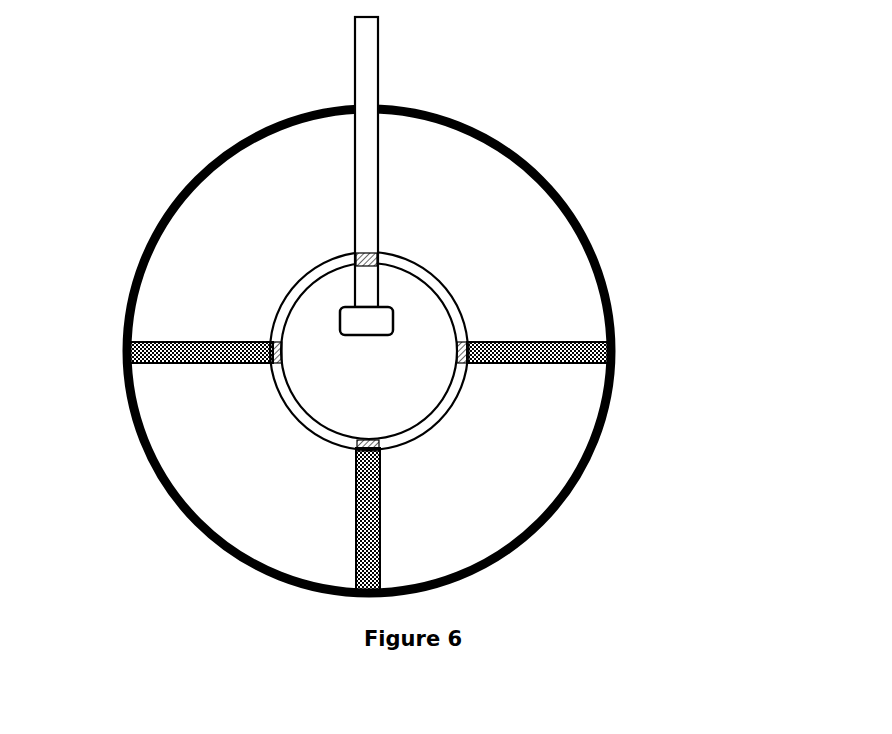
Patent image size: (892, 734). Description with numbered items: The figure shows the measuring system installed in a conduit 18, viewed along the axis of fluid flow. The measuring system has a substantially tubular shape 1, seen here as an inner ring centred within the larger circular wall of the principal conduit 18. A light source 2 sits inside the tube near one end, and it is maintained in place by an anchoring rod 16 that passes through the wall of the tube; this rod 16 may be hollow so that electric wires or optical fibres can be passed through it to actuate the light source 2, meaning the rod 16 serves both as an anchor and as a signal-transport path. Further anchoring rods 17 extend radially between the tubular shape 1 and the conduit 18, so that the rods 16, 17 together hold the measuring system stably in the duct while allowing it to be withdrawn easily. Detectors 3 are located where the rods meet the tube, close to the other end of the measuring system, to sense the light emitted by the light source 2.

The tubular shape 1 is at (450, 425).
The light source 2 is at (405, 324).
The detector 3 is at (342, 253).
The anchoring rod 16 is at (346, 157).
The anchoring rod 17 is at (343, 525).
The conduit 18 is at (579, 205).